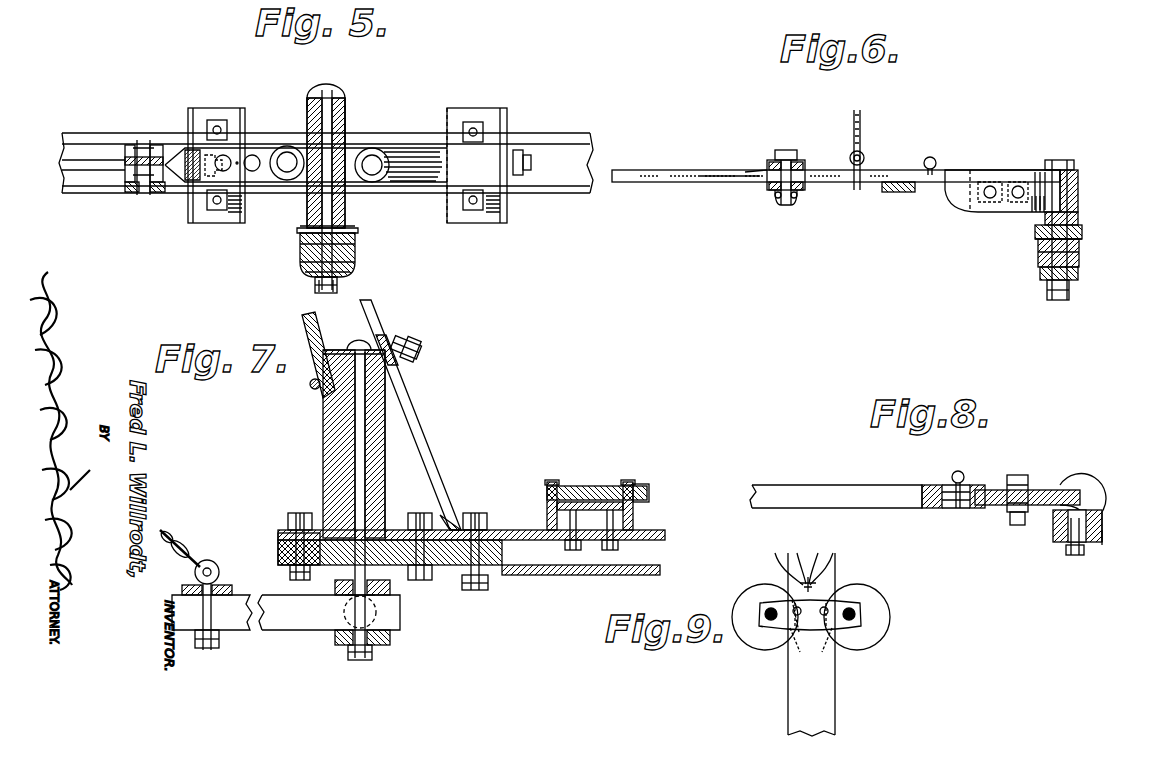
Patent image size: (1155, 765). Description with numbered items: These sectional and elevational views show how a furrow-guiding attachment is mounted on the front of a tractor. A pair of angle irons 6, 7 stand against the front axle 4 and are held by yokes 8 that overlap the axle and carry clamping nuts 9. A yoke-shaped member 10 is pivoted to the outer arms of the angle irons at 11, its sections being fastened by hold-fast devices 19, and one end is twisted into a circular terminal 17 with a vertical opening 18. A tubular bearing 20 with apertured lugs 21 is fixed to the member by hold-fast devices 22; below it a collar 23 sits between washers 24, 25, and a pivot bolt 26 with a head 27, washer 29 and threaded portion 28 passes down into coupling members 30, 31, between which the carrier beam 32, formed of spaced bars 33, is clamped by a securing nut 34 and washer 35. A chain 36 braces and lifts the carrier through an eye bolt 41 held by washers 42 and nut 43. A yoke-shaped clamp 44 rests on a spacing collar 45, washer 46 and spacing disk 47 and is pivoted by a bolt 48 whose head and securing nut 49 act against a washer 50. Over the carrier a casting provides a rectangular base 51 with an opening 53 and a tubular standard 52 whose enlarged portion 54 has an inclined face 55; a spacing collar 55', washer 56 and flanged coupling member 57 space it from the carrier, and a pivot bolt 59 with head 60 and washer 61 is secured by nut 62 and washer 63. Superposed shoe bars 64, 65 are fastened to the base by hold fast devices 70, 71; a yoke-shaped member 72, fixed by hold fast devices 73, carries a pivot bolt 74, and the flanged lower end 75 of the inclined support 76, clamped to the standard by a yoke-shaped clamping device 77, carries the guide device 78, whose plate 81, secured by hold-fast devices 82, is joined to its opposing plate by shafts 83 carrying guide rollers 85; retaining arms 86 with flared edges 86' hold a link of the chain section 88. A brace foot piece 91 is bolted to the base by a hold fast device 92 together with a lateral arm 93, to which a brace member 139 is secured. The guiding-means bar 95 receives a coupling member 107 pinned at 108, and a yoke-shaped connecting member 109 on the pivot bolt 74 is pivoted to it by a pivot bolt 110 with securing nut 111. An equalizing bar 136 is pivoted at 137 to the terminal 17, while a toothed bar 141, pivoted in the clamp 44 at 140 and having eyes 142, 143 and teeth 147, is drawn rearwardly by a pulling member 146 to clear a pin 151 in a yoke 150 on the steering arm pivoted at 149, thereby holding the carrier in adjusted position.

In FIG. 5, the axle 4 is at (555, 142).
In FIG. 5, the angle iron 6 is at (490, 122).
In FIG. 5, the angle iron 7 is at (196, 112).
In FIG. 5, the yokes 8 is at (217, 128).
In FIG. 5, the clamping nuts 9 is at (478, 130).
In FIG. 5, the yoke-shaped member 10 is at (195, 145).
In FIG. 5, the pivotal connection 11 is at (531, 162).
In FIG. 5, the circular terminal 17 is at (120, 168).
In FIG. 5, the vertically disposed opening 18 is at (125, 160).
In FIG. 5, the hold-fast devices 19 is at (252, 172).
In FIG. 5, the tubular bearing 20 is at (347, 112).
In FIG. 5, the apertured lugs 21 is at (297, 155).
In FIG. 5, the hold-fast devices 22 is at (252, 155).
In FIG. 5, the collar 23 is at (305, 226).
In FIG. 5, the washer 24 is at (347, 192).
In FIG. 5, the washer 25 is at (304, 232).
In FIG. 5, the pivot bolt 26 is at (310, 110).
In FIG. 5, the head 27 is at (322, 88).
In FIG. 5, the threaded lower terminal portion 28 is at (338, 292).
In FIG. 5, the washer 29 is at (342, 95).
In FIG. 5, the coupling member 30 is at (300, 252).
In FIG. 5, the coupling member 31 is at (305, 270).
In FIG. 5, the beam 32 is at (300, 246).
In FIG. 7, the beam 32 is at (296, 641).
In FIG. 5, the bars 33 is at (303, 262).
In FIG. 6, the bars 33 is at (1038, 258).
In FIG. 7, the bars 33 is at (248, 632).
In FIG. 5, the securing nut 34 is at (314, 280).
In FIG. 5, the washer 35 is at (338, 282).
In FIG. 7, the chain 36 is at (165, 530).
In FIG. 7, the eye bolt 41 is at (208, 560).
In FIG. 7, the washers 42 is at (186, 586).
In FIG. 7, the nut 43 is at (212, 650).
In FIG. 6, the yoke-shaped clamp 44 is at (1078, 188).
In FIG. 6, the spacing collar 45 is at (1078, 218).
In FIG. 6, the washer 46 is at (1082, 232).
In FIG. 6, the spacing disk 47 is at (1038, 238).
In FIG. 6, the bolt 48 is at (1045, 182).
In FIG. 6, the head 49 is at (1060, 160).
In FIG. 6, the washer 50 is at (1042, 276).
In FIG. 7, the rectangular base 51 is at (450, 565).
In FIG. 7, the tubular standard 52 is at (378, 455).
In FIG. 7, the opening 53 is at (380, 483).
In FIG. 7, the enlarged upper terminal portion 54 is at (326, 390).
In FIG. 7, the inclined face 55 is at (287, 378).
In FIG. 7, the spacing collar 55' is at (409, 612).
In FIG. 7, the washer 56 is at (385, 595).
In FIG. 7, the flanged coupling member 57 is at (336, 585).
In FIG. 7, the pivot bolt 59 is at (355, 450).
In FIG. 7, the head 60 is at (358, 340).
In FIG. 7, the washer 61 is at (347, 350).
In FIG. 7, the securing nut 62 is at (372, 655).
In FIG. 7, the washer 63 is at (350, 655).
In FIG. 7, the bar 64 is at (662, 536).
In FIG. 8, the bar 64 is at (1100, 543).
In FIG. 7, the bar 65 is at (660, 568).
In FIG. 7, the hold fast device 70 is at (420, 513).
In FIG. 7, the hold fast device 71 is at (490, 528).
In FIG. 7, the yoke-shaped member 72 is at (633, 518).
In FIG. 8, the yoke-shaped member 72 is at (1102, 515).
In FIG. 7, the hold fast devices 73 is at (575, 550).
In FIG. 8, the hold fast devices 73 is at (1073, 556).
In FIG. 7, the pivot bolt 74 is at (588, 486).
In FIG. 8, the pivot bolt 74 is at (1090, 482).
In FIG. 7, the flanged lower end 75 is at (482, 520).
In FIG. 7, the support 76 is at (415, 415).
In FIG. 9, the support 76 is at (820, 650).
In FIG. 7, the yoke-shaped clamping device 77 is at (418, 333).
In FIG. 9, the guide device 78 is at (744, 594).
In FIG. 9, the plate 81 is at (782, 632).
In FIG. 9, the hold-fast devices 82 is at (822, 625).
In FIG. 9, the shafts 83 is at (769, 624).
In FIG. 9, the guide roller 85 is at (872, 610).
In FIG. 9, the retaining arms 86 is at (800, 555).
In FIG. 9, the flared edges 86' is at (811, 555).
In FIG. 9, the section 88 is at (815, 583).
In FIG. 7, the foot piece 91 is at (304, 515).
In FIG. 7, the hold fast device 92 is at (280, 548).
In FIG. 7, the lateral arm 93 is at (290, 572).
In FIG. 8, the bar 95 is at (846, 478).
In FIG. 8, the coupling member 107 is at (996, 510).
In FIG. 8, the securing connection 108 is at (958, 471).
In FIG. 7, the yoke-shaped connecting member 109 is at (606, 486).
In FIG. 8, the yoke-shaped connecting member 109 is at (1050, 490).
In FIG. 8, the pivot bolt 110 is at (1018, 475).
In FIG. 8, the securing nut 111 is at (1022, 525).
In FIG. 5, the equalizing bar 136 is at (135, 193).
In FIG. 6, the equalizing bar 136 is at (896, 192).
In FIG. 5, the pivotal connection 137 is at (141, 150).
In FIG. 7, the brace member 139 is at (490, 588).
In FIG. 6, the pivotal connection 140 is at (988, 196).
In FIG. 6, the toothed bar 141 is at (648, 182).
In FIG. 6, the eye 142 is at (935, 160).
In FIG. 6, the eye 143 is at (865, 156).
In FIG. 6, the pulling member 146 is at (860, 128).
In FIG. 6, the teeth 147 is at (700, 182).
In FIG. 6, the pivot 149 is at (773, 196).
In FIG. 6, the yoke 150 is at (800, 160).
In FIG. 6, the pin 151 is at (767, 170).